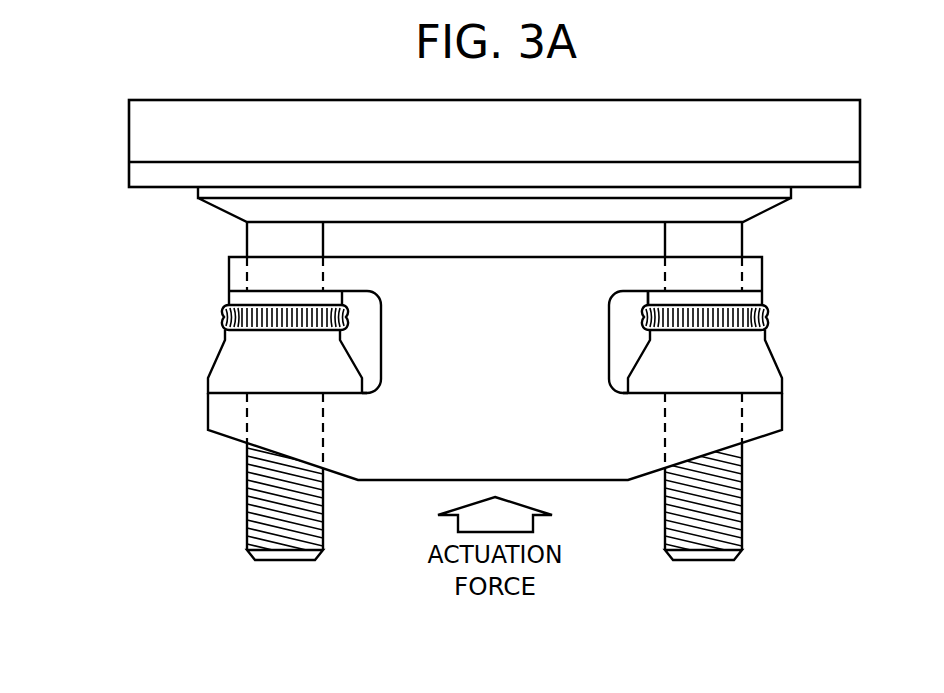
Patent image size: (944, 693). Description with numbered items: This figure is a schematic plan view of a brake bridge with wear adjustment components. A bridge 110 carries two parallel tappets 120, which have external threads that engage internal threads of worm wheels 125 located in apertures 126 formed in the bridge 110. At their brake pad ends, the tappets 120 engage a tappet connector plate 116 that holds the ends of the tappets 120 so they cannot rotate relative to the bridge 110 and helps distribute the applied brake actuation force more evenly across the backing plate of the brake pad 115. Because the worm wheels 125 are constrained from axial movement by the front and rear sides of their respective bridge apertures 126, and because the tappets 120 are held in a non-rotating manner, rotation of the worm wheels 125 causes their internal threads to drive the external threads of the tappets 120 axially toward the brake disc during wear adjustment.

The bridge 110 is at (225, 415).
The brake pad 115 is at (129, 130).
The tappet connector plate 116 is at (240, 208).
The tappet 120 is at (247, 493).
The worm wheel 125 is at (238, 338).
The aperture 126 is at (360, 325).